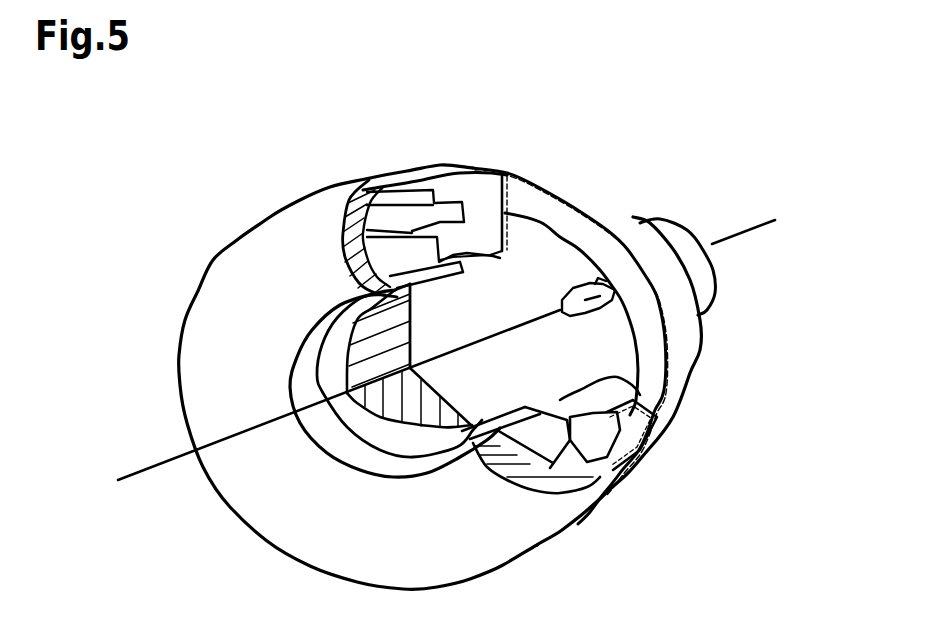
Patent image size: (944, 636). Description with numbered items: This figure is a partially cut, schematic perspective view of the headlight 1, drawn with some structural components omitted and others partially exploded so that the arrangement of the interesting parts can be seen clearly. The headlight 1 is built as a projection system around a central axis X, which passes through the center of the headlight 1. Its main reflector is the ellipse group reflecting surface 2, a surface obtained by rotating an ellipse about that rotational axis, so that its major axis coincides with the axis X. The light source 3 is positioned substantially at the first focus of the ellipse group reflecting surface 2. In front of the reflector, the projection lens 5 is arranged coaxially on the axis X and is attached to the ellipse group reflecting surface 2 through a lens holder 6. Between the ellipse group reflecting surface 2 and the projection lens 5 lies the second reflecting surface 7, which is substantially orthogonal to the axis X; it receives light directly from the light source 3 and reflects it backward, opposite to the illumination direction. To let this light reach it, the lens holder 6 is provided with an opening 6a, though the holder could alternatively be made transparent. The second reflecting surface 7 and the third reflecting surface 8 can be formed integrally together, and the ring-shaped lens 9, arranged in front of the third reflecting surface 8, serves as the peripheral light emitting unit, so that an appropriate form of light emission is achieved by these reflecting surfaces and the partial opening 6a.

The headlight 1 is at (763, 126).
The ellipse group reflecting surface 2 is at (628, 228).
The light source 3 is at (615, 309).
The projection lens 5 is at (370, 440).
The lens holder 6 is at (513, 176).
The opening 6a is at (481, 262).
The second reflecting surface 7 is at (634, 374).
The third reflecting surface 8 is at (466, 205).
The ring-shaped lens 9 is at (218, 282).
The axis X is at (439, 350).